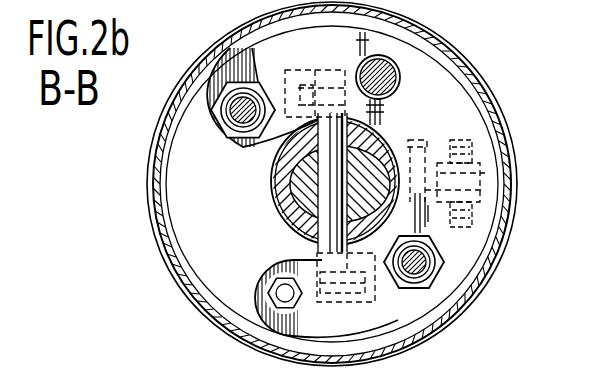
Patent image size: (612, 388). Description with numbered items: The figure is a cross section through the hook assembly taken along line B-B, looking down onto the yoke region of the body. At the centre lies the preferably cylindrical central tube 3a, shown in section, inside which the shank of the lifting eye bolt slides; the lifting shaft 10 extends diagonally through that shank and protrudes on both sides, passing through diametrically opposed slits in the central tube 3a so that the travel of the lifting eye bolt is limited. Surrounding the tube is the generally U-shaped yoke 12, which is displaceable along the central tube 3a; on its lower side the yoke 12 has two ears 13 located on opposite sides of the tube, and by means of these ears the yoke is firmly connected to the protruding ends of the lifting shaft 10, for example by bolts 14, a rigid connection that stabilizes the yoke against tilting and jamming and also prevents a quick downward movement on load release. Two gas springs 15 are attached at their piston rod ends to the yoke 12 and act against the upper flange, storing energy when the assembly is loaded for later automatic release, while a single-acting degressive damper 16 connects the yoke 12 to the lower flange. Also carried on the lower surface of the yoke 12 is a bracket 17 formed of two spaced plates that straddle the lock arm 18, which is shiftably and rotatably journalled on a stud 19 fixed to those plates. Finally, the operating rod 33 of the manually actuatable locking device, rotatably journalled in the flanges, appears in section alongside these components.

The central tube 3a is at (275, 183).
The lifting shaft 10 is at (318, 211).
The yoke 12 is at (340, 47).
The ears 13 is at (285, 70).
The bolts 14 is at (352, 111).
The gas springs 15 is at (243, 128).
The damper 16 is at (285, 293).
The bracket 17 is at (480, 163).
The lock arm 18 is at (480, 181).
The stud 19 is at (485, 148).
The operating rod 33 is at (378, 77).